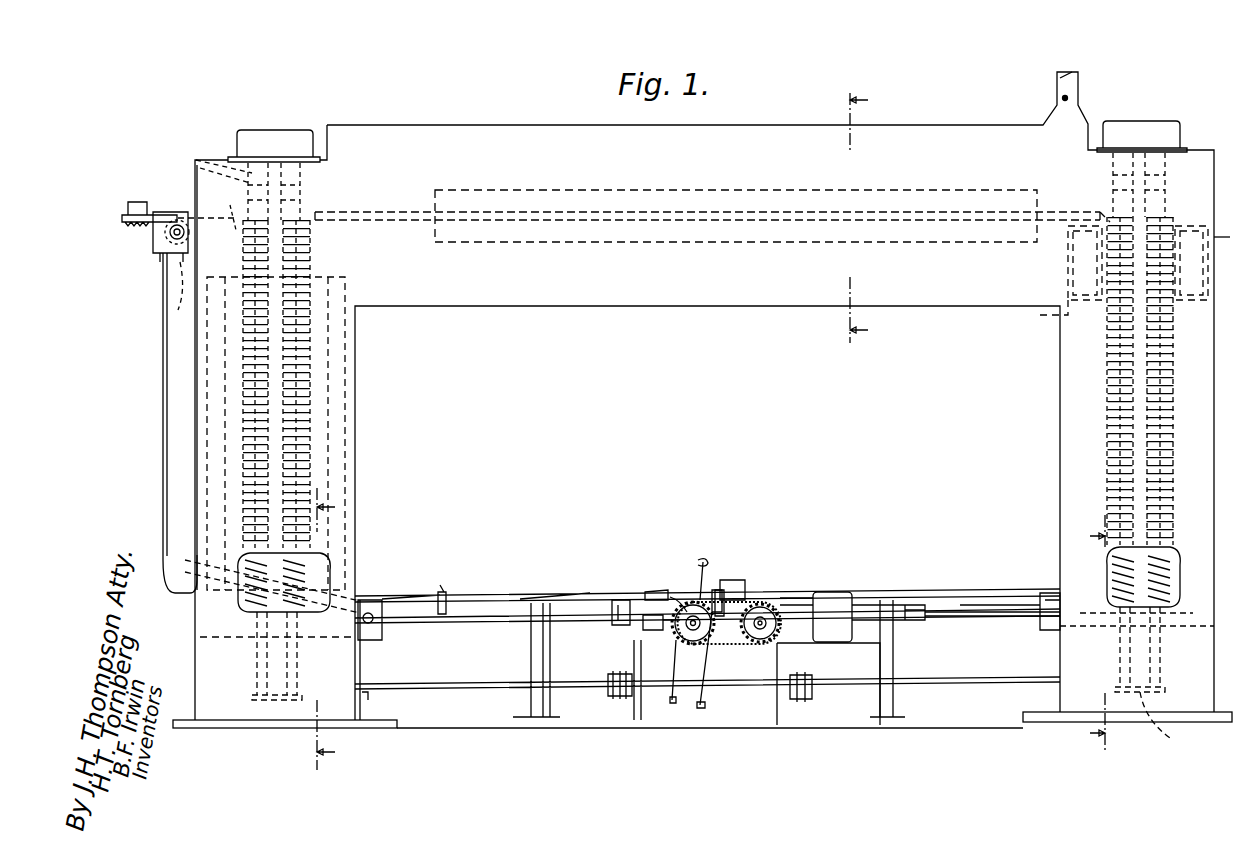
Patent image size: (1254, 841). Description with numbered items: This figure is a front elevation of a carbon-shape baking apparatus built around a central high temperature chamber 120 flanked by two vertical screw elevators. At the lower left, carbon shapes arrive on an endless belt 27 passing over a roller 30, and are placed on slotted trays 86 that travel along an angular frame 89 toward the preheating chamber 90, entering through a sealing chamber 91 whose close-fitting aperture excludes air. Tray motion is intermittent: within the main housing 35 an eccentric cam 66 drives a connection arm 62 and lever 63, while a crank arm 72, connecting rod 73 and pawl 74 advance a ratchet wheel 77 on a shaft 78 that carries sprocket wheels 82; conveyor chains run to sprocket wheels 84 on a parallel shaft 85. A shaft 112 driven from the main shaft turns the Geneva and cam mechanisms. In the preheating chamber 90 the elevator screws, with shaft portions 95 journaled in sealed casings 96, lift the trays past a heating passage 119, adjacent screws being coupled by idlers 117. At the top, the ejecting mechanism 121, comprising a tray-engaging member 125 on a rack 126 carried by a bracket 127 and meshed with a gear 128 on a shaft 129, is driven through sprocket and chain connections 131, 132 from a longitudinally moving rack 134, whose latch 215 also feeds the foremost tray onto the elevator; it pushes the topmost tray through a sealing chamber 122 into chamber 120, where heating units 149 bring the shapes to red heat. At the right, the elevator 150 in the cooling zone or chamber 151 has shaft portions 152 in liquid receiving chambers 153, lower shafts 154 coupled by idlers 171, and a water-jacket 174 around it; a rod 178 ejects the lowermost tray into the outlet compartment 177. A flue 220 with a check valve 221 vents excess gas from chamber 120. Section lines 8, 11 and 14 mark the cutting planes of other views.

The section line 8- 8 is at (328, 630).
The section line 11- 11 is at (1088, 635).
The section line 14- 14 is at (875, 217).
The endless belt 27 is at (720, 590).
The roller 30 is at (748, 590).
The main housing 35 is at (752, 725).
The connection arm 62 is at (705, 675).
The lever 63 is at (703, 560).
The eccentric cam 66 is at (305, 425).
The crank arm 72 is at (670, 683).
The connecting rod 73 is at (645, 650).
The pawl 74 is at (650, 629).
The ratchet wheel 77 is at (673, 598).
The shaft 78 is at (639, 587).
The sprocket wheels 82 is at (700, 646).
The sprocket wheels 84 is at (805, 598).
The shaft 85 is at (936, 617).
The trays 86 is at (585, 210).
The angular frame 89 is at (500, 598).
The preheating chamber 90 is at (345, 535).
The sealing chamber 91 is at (442, 592).
The shaft portions 95 is at (217, 154).
The sealed casings 96 is at (260, 140).
The shaft 112 is at (470, 686).
The idlers 117 is at (283, 700).
The heating passage 119 is at (335, 353).
The high temperature chamber 120 is at (716, 306).
The ejecting mechanism 121 is at (125, 231).
The sealing chamber 122 is at (345, 300).
The tray-engaging member 125 is at (232, 218).
The rack 126 is at (220, 215).
The bracket 127 is at (160, 262).
The gear 128 is at (178, 305).
The shaft 129 is at (177, 225).
The sprocket and chain connection 131 is at (163, 440).
The sprocket and chain connection 132 is at (232, 596).
The rack 134 is at (445, 624).
The heating units 149 is at (668, 190).
The elevator 150 is at (1178, 575).
The cooling zone or chamber 151 is at (1085, 427).
The shaft portions 152 is at (1105, 200).
The liquid receiving chambers 153 is at (1155, 125).
The shafts 154 is at (1135, 672).
The idlers 171 is at (1170, 738).
The water-jacket 174 is at (1240, 275).
The outlet compartment 177 is at (1045, 592).
The rod 178 is at (1010, 620).
The latch 215 is at (620, 600).
The flue 220 is at (1070, 80).
The check valve 221 is at (1060, 98).